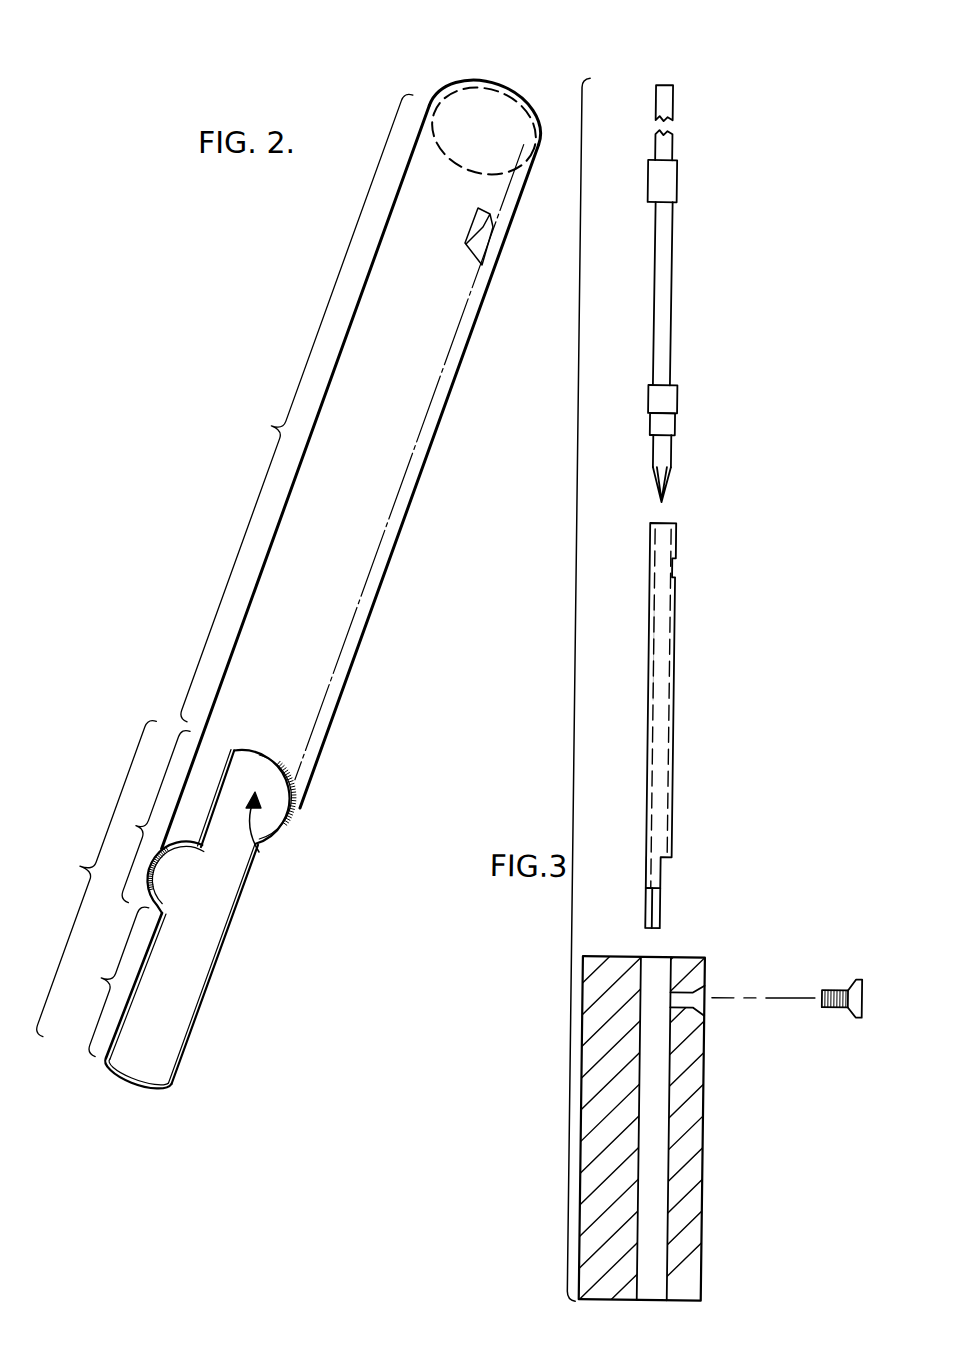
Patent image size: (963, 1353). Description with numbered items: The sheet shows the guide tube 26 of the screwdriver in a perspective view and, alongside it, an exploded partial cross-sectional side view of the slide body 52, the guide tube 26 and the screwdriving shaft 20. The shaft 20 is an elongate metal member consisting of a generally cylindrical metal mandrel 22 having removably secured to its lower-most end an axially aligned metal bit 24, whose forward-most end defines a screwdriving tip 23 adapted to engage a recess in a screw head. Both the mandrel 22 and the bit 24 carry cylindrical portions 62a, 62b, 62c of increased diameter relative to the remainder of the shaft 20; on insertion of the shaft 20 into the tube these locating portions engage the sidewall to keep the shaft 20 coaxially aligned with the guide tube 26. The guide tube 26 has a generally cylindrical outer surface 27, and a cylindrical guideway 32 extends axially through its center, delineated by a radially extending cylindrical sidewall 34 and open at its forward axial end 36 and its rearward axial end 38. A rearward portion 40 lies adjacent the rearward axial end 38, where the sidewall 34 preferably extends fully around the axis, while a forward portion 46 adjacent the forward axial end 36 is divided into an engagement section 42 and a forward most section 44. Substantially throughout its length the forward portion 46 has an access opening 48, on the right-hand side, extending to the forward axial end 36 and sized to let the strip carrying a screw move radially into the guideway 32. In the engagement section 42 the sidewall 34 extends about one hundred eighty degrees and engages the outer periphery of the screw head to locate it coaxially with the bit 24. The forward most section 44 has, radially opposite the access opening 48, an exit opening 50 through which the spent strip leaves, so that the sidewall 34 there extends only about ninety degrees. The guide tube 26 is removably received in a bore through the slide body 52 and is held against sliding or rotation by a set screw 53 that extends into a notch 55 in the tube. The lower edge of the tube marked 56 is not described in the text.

In FIG. 3, the shaft 20 is at (672, 276).
In FIG. 3, the mandrel 22 is at (669, 132).
In FIG. 3, the screwdriving tip 23 is at (671, 493).
In FIG. 3, the bit 24 is at (671, 455).
In FIG. 2, the guide tube 26 is at (390, 579).
In FIG. 3, the guide tube 26 is at (650, 702).
In FIG. 2, the outer surface 27 is at (390, 440).
In FIG. 2, the guideway 32 is at (259, 847).
In FIG. 3, the guideway 32 is at (666, 634).
In FIG. 2, the sidewall 34 is at (294, 818).
In FIG. 3, the sidewall 34 is at (678, 535).
In FIG. 2, the forward axial end 36 is at (127, 1090).
In FIG. 2, the rearward axial end 38 is at (497, 82).
In FIG. 3, the rearward axial end 38 is at (651, 523).
In FIG. 2, the rearward portion 40 is at (297, 407).
In FIG. 2, the engagement section 42 is at (145, 817).
In FIG. 3, the engagement section 42 is at (645, 857).
In FIG. 2, the forward most section 44 is at (108, 982).
In FIG. 3, the forward most section 44 is at (645, 891).
In FIG. 2, the forward portion 46 is at (97, 879).
In FIG. 3, the forward portion 46 is at (601, 855).
In FIG. 2, the access opening 48 is at (222, 850).
In FIG. 3, the access opening 48 is at (668, 871).
In FIG. 2, the exit opening 50 is at (130, 969).
In FIG. 3, the exit opening 50 is at (657, 905).
In FIG. 3, the slide body 52 is at (694, 1114).
In FIG. 3, the set screw 53 is at (858, 977).
In FIG. 2, the notch 55 is at (490, 250).
In FIG. 3, the notch 55 is at (677, 567).
In FIG. 3, the bottom edge 56 is at (658, 930).
In FIG. 3, the cylindrical portion 62a is at (675, 430).
In FIG. 3, the cylindrical portion 62b is at (677, 400).
In FIG. 3, the cylindrical portion 62c is at (674, 189).